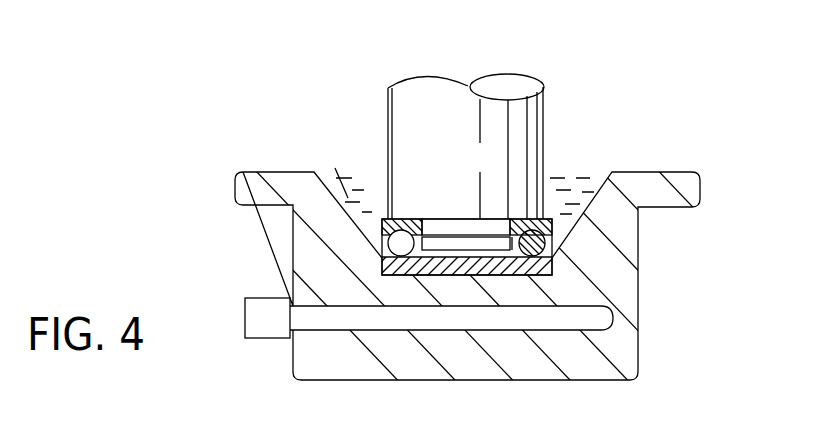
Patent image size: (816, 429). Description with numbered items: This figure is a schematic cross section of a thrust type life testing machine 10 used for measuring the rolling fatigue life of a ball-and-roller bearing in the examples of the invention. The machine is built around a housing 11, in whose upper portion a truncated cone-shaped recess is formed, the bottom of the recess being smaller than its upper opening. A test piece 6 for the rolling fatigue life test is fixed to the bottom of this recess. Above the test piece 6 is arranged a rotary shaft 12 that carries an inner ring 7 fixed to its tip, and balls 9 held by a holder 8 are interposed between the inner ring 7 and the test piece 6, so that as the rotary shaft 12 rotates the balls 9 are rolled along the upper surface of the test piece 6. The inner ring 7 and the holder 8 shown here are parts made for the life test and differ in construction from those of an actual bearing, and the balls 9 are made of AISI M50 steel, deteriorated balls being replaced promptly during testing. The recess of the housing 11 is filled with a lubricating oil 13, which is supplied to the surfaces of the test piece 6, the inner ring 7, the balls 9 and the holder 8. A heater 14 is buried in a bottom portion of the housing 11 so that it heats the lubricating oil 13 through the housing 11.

The test piece 6 is at (382, 259).
The inner ring 7 is at (547, 217).
The holder 8 is at (558, 250).
The balls 9 is at (378, 216).
The bearing device 10 is at (642, 128).
The housing 11 is at (632, 282).
The rotary shaft 12 is at (395, 100).
The lubricating oil 13 is at (340, 170).
The heater 14 is at (320, 304).